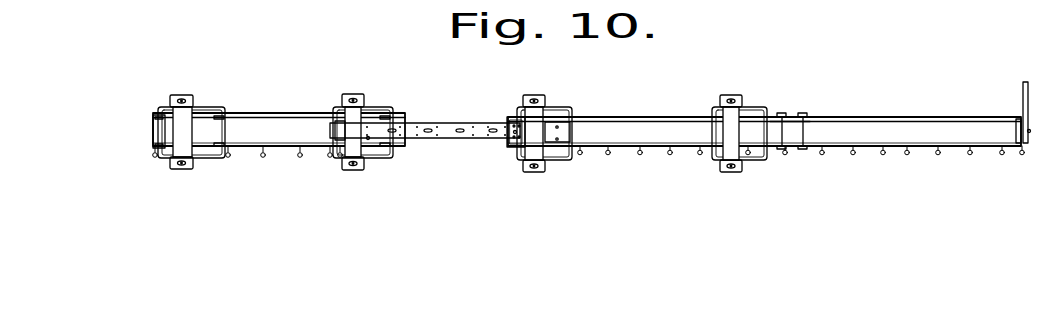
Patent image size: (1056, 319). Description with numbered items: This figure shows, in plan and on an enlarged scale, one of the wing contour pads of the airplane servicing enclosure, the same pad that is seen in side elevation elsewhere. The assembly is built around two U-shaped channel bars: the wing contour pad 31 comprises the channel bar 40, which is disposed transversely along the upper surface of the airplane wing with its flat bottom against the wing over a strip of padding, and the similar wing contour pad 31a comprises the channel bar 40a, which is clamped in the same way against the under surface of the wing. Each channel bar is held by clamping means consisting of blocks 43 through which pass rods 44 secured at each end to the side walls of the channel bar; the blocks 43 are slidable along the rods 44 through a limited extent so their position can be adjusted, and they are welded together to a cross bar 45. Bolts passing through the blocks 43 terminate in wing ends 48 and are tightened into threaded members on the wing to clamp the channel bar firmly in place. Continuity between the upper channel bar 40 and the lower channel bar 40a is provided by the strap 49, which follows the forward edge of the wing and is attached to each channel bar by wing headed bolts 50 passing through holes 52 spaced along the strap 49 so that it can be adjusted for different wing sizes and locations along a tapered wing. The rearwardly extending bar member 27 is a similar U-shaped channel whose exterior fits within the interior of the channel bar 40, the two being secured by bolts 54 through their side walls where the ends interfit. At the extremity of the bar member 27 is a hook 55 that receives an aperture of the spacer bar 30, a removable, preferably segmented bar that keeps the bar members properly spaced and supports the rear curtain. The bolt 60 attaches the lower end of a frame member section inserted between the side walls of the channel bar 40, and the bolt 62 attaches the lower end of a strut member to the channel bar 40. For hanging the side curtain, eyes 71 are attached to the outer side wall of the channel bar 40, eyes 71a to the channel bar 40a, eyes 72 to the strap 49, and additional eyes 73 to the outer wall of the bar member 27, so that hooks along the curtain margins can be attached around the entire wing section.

The bar member 27 is at (906, 118).
The spacer bar 30 is at (1022, 98).
The wing contour pad 31 is at (672, 117).
The wing contour pad 31a is at (288, 148).
The channel bar 40 is at (614, 117).
The channel bar 40a is at (270, 112).
The block 43 is at (183, 94).
The rod 44 is at (215, 163).
The cross bar 45 is at (530, 142).
The wing end 48 is at (351, 94).
The strap 49 is at (440, 122).
The wing headed bolt 50 is at (366, 140).
The hole 52 is at (476, 122).
The bolt 54 is at (796, 136).
The hook 55 is at (1031, 134).
The bolt 60 is at (718, 128).
The bolt 62 is at (510, 119).
The eye 71 is at (646, 156).
The eye 71a is at (262, 158).
The eye 72 is at (428, 134).
The eye 73 is at (908, 156).